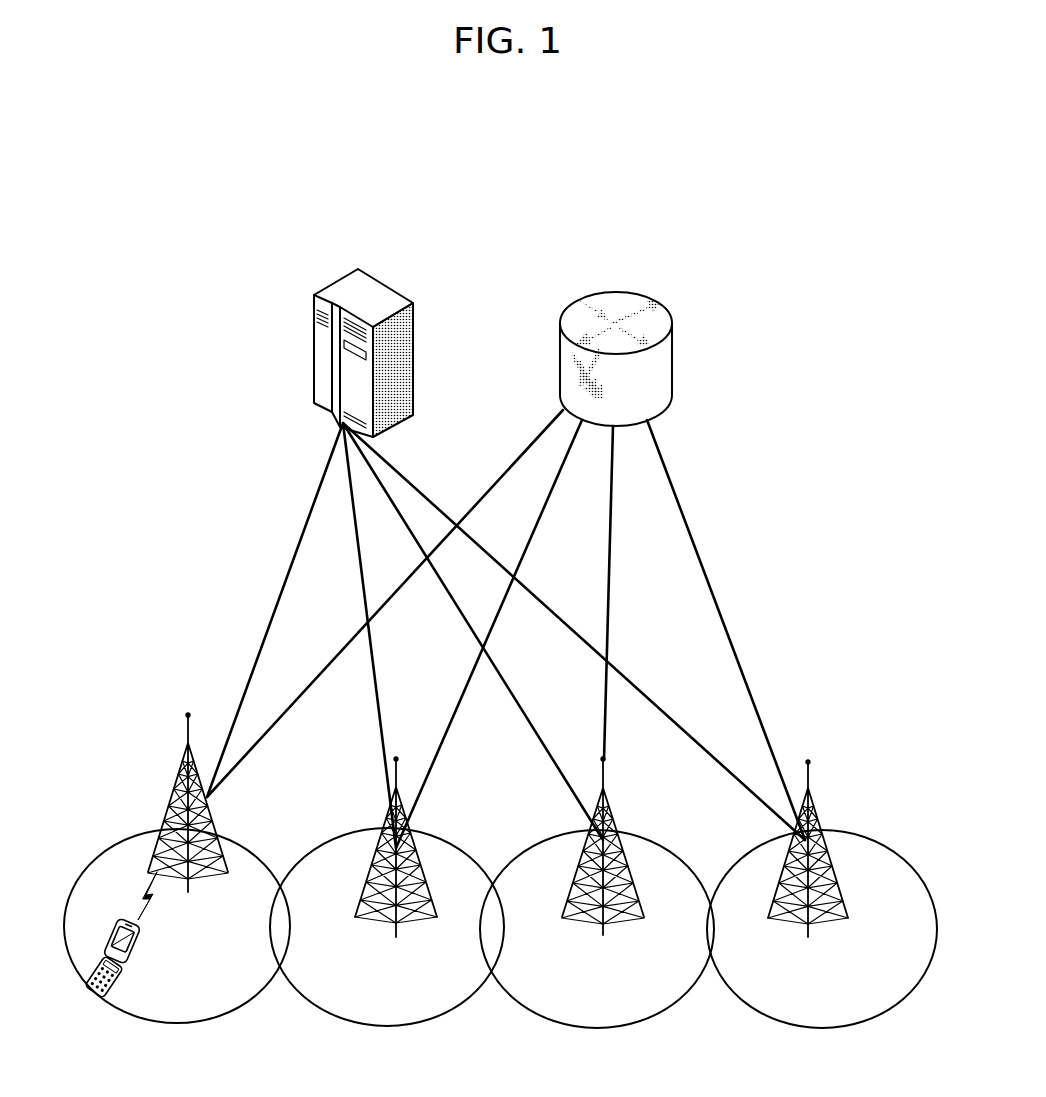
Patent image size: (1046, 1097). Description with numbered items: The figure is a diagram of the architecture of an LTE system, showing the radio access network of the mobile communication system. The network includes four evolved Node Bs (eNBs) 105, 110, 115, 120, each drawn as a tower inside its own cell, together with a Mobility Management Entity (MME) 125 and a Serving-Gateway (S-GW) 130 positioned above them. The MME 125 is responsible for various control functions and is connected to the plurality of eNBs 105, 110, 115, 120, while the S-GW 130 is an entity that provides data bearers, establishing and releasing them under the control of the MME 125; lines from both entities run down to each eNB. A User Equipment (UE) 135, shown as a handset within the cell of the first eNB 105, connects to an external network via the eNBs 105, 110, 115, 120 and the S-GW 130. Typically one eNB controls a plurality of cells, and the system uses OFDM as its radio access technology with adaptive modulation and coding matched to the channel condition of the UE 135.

The evolved Node B 105 is at (175, 782).
The evolved Node B 110 is at (387, 807).
The evolved Node B 115 is at (612, 807).
The evolved Node B 120 is at (818, 808).
The Mobility Management Entity 125 is at (348, 292).
The Serving-Gateway 130 is at (612, 300).
The User Equipment 135 is at (135, 947).